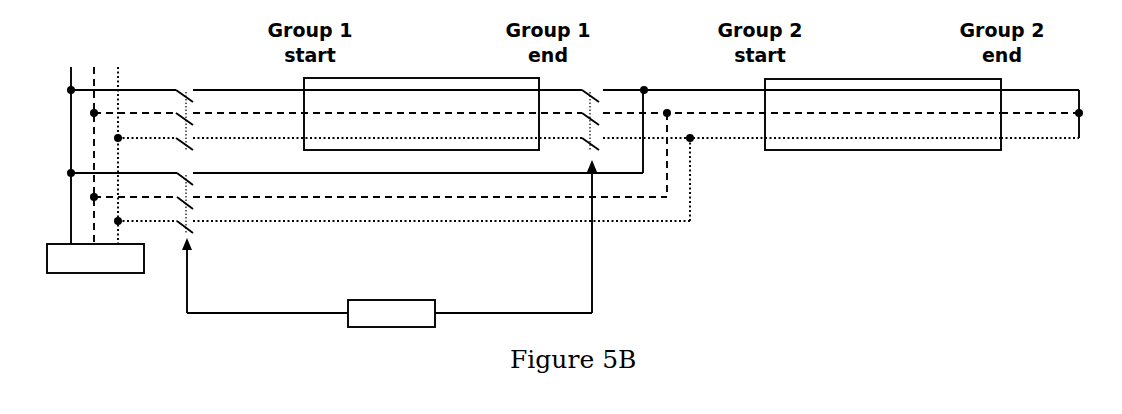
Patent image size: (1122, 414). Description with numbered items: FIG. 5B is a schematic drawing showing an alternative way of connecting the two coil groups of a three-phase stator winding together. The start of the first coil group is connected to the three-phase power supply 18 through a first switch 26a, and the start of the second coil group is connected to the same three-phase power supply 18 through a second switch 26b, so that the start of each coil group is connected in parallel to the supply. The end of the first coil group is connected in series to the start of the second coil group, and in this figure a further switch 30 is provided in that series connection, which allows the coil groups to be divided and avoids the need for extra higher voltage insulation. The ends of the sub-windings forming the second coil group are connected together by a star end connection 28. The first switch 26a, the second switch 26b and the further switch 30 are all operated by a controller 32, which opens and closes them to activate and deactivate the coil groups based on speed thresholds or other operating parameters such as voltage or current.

The three-phase power supply 18 is at (60, 262).
The first switch 26a is at (182, 80).
The second switch 26b is at (197, 238).
The star end connection 28 is at (1065, 150).
The further switch 30 is at (595, 78).
The controller 32 is at (400, 310).